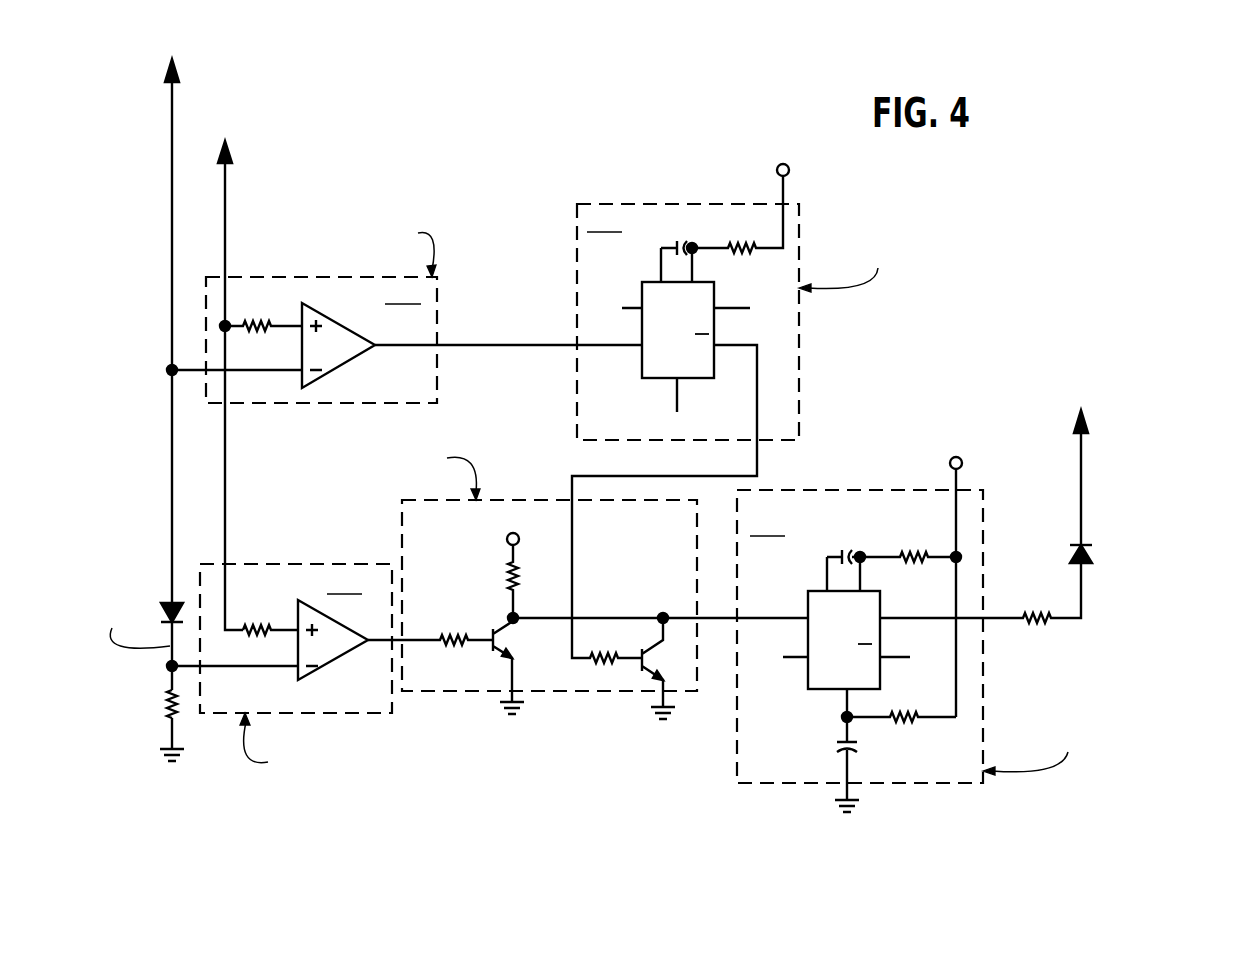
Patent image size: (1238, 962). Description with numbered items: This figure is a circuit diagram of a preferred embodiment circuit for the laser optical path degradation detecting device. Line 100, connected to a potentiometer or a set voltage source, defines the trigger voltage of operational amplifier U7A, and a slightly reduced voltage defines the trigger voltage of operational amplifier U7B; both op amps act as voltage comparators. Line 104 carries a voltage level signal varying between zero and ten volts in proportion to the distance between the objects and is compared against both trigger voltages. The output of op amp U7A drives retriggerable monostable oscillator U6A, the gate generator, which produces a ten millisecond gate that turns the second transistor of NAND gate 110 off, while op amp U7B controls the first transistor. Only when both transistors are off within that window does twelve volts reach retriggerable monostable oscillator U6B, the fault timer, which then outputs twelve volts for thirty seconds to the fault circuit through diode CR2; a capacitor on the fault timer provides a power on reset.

The line 100 is at (170, 318).
The line (voltage level signal) 104 is at (225, 206).
The NAND gate 110 is at (436, 678).
The operational amplifier U7A is at (424, 309).
The operational amplifier U7B is at (311, 675).
The retriggerable monostable oscillator (gate generator) U6A is at (770, 401).
The retriggerable monostable oscillator (fault timer) U6B is at (976, 615).
The output diode CR2 is at (1105, 557).